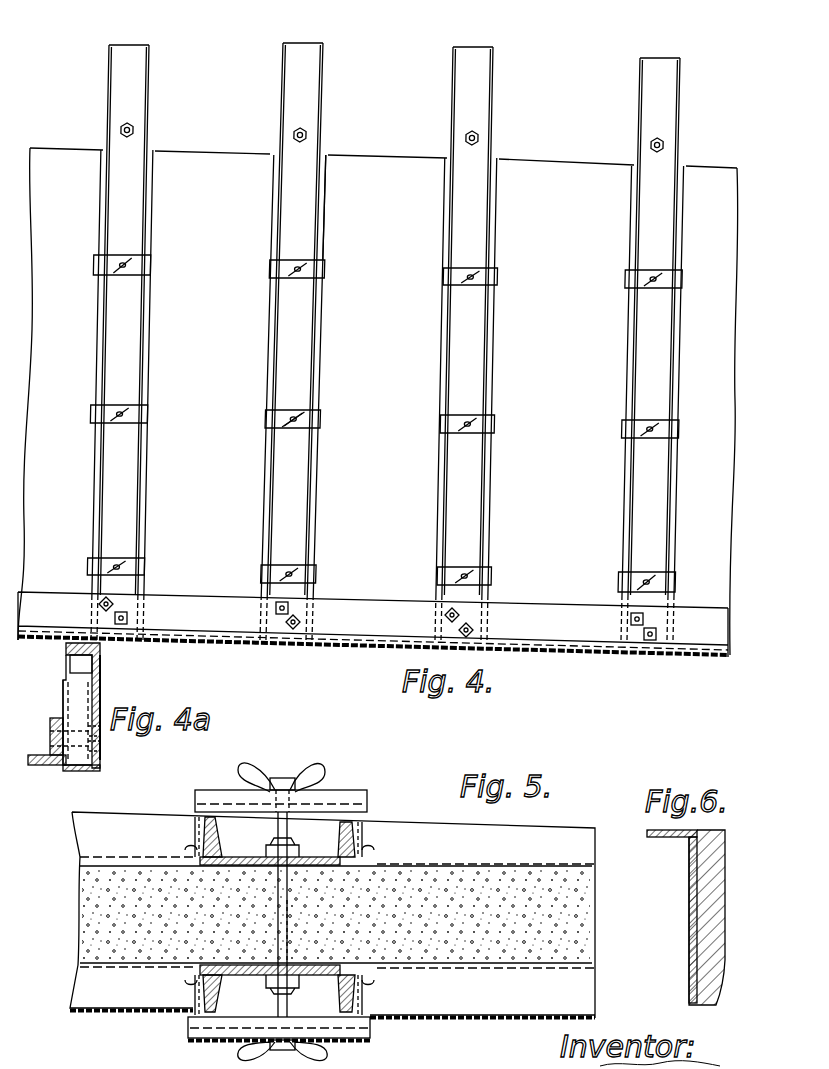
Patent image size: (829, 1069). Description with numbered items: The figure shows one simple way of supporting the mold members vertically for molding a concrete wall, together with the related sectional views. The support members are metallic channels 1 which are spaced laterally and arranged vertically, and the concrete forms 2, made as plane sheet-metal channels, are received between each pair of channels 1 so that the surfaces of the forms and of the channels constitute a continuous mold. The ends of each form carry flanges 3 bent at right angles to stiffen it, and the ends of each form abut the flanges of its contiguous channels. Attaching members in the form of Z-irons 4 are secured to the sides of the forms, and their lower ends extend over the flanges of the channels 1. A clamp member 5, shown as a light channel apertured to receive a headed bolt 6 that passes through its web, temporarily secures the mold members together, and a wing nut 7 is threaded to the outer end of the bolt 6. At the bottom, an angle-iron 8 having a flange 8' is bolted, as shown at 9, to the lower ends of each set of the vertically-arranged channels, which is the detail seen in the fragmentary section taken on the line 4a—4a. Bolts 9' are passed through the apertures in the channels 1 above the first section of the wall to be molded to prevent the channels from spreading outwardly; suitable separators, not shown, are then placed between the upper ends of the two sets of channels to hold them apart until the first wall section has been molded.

In FIG. 4, the metallic channel 1 is at (312, 92).
In FIG. 4A, the metallic channel 1 is at (70, 660).
In FIG. 5, the metallic channel 1 is at (300, 852).
In FIG. 4, the form 2 is at (378, 401).
In FIG. 4A, the form 2 is at (100, 692).
In FIG. 5, the form 2 is at (78, 857).
In FIG. 6, the form 2 is at (688, 920).
In FIG. 4, the flange 3 is at (386, 160).
In FIG. 5, the flange 3 is at (103, 826).
In FIG. 6, the flange 3 is at (662, 837).
In FIG. 4, the Z-iron 4 is at (322, 232).
In FIG. 4A, the Z-iron 4 is at (63, 696).
In FIG. 5, the Z-iron 4 is at (205, 825).
In FIG. 4, the section line 4a— 4a is at (582, 673).
In FIG. 4, the clamp member 5 is at (318, 271).
In FIG. 5, the clamp member 5 is at (213, 802).
In FIG. 5, the headed bolt 6 is at (278, 832).
In FIG. 4, the wing nut 7 is at (320, 415).
In FIG. 5, the wing nut 7 is at (265, 790).
In FIG. 4, the angle-iron 8 is at (373, 635).
In FIG. 4A, the angle-iron 8 is at (43, 729).
In FIG. 4, the flange 8' is at (367, 646).
In FIG. 4A, the flange 8' is at (54, 773).
In FIG. 4, the bolt 9 is at (377, 639).
In FIG. 4A, the bolt 9 is at (58, 739).
In FIG. 4, the bolt 9' is at (392, 133).
In FIG. 5, the bolt 9' is at (261, 951).